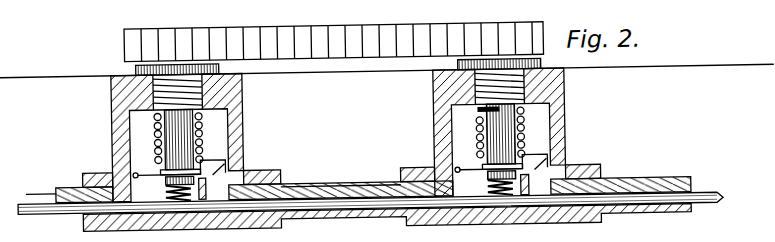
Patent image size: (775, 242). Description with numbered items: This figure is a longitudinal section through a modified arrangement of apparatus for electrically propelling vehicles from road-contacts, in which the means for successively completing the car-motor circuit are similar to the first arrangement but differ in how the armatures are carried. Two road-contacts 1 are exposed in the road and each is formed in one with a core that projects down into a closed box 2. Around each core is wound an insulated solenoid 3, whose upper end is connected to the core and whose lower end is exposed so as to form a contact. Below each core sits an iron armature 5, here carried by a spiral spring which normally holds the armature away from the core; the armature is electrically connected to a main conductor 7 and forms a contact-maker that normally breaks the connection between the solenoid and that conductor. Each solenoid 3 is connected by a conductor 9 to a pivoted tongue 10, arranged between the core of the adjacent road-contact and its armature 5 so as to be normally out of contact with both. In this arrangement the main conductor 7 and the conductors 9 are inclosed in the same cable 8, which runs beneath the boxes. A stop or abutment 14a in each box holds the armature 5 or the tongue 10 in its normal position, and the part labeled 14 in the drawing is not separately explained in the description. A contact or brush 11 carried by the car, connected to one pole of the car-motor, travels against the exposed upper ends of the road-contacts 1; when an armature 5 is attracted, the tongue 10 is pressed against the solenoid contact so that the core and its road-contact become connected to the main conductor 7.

The road-contact 1 is at (134, 66).
The closed box 2 is at (240, 114).
The insulated solenoid 3 is at (154, 128).
The armature 5 is at (167, 178).
The main conductor 7 is at (55, 209).
The cable 8 is at (313, 184).
The conductor 9 is at (50, 189).
The pivoted tongue 10 is at (158, 172).
The contact or brush 11 is at (334, 42).
The contact arm 14 is at (225, 156).
The stop or abutment 14a is at (205, 197).